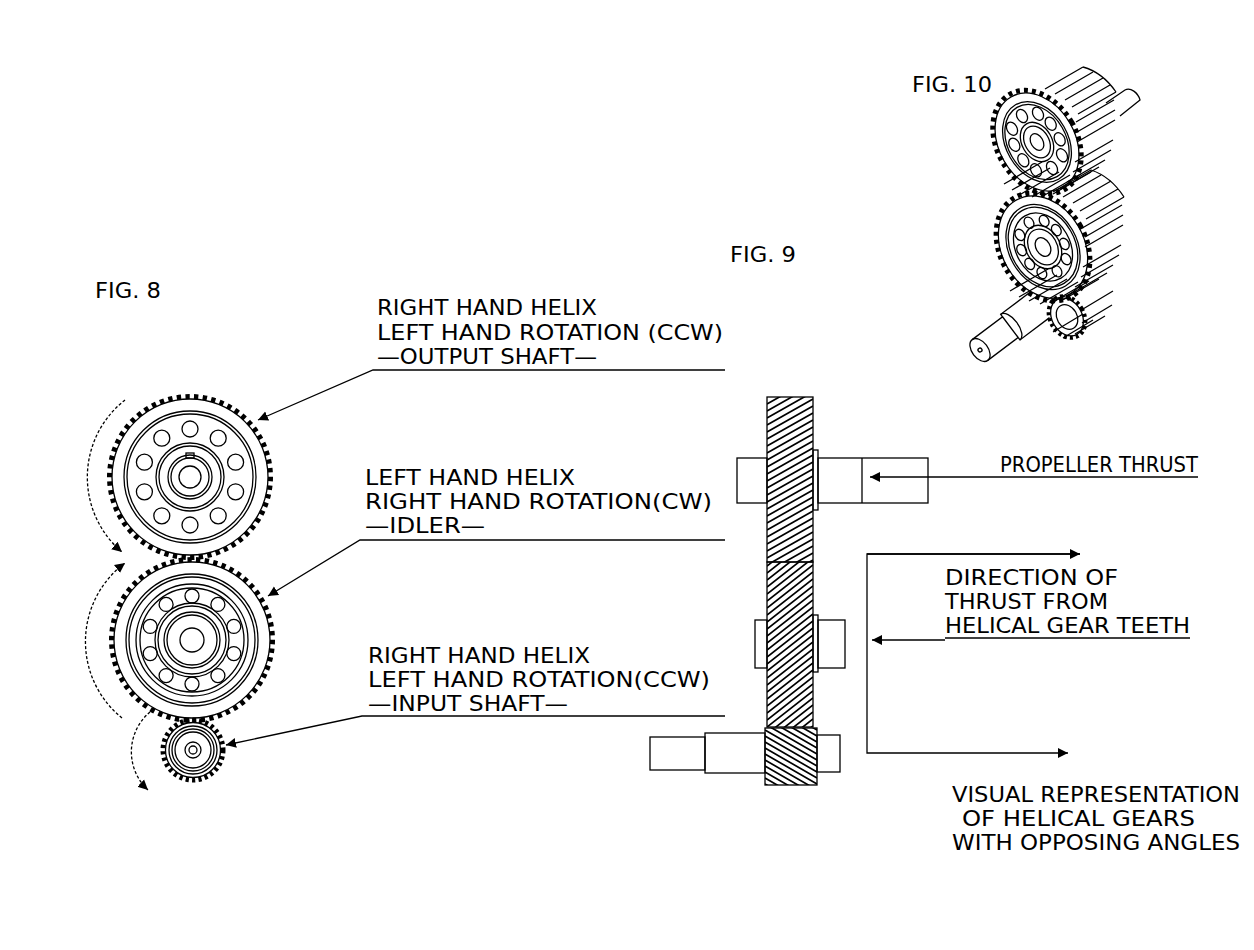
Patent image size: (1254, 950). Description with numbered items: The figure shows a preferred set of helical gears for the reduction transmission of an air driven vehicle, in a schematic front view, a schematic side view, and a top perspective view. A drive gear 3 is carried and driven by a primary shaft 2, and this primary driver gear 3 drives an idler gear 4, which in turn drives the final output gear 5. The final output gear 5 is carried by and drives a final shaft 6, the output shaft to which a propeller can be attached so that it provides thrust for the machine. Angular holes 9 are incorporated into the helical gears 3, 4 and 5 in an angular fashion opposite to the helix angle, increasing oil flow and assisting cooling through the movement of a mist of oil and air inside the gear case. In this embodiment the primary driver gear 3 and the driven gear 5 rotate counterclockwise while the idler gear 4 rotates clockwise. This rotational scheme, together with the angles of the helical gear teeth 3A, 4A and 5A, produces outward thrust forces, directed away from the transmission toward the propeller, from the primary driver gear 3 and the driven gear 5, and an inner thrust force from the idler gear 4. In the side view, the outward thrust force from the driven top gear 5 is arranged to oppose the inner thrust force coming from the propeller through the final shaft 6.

In FIG. 9, the primary shaft 2 is at (706, 768).
In FIG. 10, the primary shaft 2 is at (1003, 346).
In FIG. 8, the drive gear 3 is at (224, 768).
In FIG. 9, the drive gear 3 is at (817, 775).
In FIG. 10, the drive gear 3 is at (1074, 335).
In FIG. 8, the helical gear teeth of drive gear 3A is at (205, 782).
In FIG. 9, the helical gear teeth of drive gear 3A is at (783, 786).
In FIG. 8, the idler gear 4 is at (264, 630).
In FIG. 9, the idler gear 4 is at (767, 583).
In FIG. 10, the idler gear 4 is at (1000, 225).
In FIG. 8, the helical gear teeth of idler gear 4A is at (262, 568).
In FIG. 9, the helical gear teeth of idler gear 4A is at (815, 594).
In FIG. 8, the final output gear 5 is at (280, 477).
In FIG. 9, the final output gear 5 is at (767, 415).
In FIG. 10, the final output gear 5 is at (1000, 135).
In FIG. 8, the helical gear teeth of final output gear 5A is at (185, 393).
In FIG. 9, the helical gear teeth of final output gear 5A is at (800, 402).
In FIG. 9, the final shaft 6 is at (903, 474).
In FIG. 10, the final shaft 6 is at (1113, 103).
In FIG. 8, the angular holes 9 is at (232, 413).